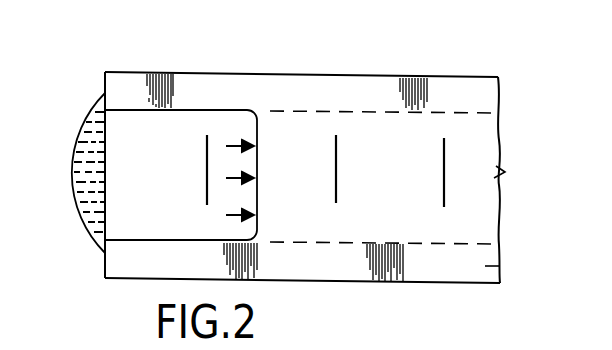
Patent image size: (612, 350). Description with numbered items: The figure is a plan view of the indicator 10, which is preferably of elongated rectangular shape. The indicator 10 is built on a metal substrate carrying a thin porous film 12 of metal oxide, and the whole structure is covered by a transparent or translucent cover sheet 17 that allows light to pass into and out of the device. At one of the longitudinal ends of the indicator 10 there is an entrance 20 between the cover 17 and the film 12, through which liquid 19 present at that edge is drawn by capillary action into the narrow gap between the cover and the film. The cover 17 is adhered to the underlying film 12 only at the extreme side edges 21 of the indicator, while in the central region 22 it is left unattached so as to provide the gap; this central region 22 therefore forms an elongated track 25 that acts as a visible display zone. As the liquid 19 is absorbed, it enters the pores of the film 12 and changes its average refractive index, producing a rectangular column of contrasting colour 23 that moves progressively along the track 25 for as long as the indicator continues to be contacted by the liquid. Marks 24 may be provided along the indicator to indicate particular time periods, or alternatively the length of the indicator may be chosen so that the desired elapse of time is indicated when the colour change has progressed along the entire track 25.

The indicator 10 is at (173, 73).
The porous film 12 is at (298, 145).
The cover sheet 17 is at (380, 90).
The liquid 19 is at (97, 205).
The entrance 20 is at (70, 147).
The side edges 21 is at (476, 90).
The central region 22 is at (488, 138).
The column of contrasting colour 23 is at (137, 180).
The marks 24 is at (199, 142).
The track 25 is at (310, 231).